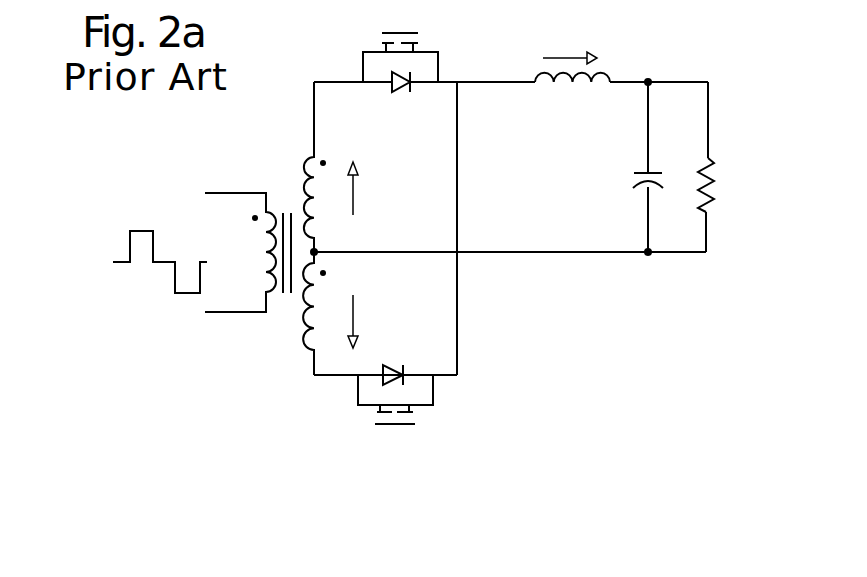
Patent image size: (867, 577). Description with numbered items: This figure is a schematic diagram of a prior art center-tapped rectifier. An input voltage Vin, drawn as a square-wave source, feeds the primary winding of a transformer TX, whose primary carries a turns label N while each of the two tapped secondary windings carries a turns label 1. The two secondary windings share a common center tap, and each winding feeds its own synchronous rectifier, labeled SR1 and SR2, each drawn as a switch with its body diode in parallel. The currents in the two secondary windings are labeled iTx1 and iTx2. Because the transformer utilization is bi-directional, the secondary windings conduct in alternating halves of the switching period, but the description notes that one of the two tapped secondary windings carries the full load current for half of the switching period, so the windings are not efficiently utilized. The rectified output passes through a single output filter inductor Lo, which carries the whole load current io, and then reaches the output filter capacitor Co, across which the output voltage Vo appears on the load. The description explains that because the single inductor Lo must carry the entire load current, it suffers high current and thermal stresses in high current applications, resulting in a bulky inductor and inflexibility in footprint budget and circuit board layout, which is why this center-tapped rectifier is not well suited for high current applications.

The synchronous rectifier 2 SR2 is at (400, 46).
The synchronous rectifier 1 SR1 is at (395, 416).
The output inductor Lo is at (572, 96).
The output current io is at (570, 38).
The output capacitor Co is at (633, 164).
The output voltage / load Vo is at (728, 186).
The transformer TX is at (291, 228).
The primary winding turns N is at (240, 252).
The secondary winding turns 1 is at (335, 257).
The secondary winding 1 current iTx1 is at (376, 188).
The secondary winding 2 current iTx2 is at (376, 321).
The input voltage waveform Vin is at (144, 251).